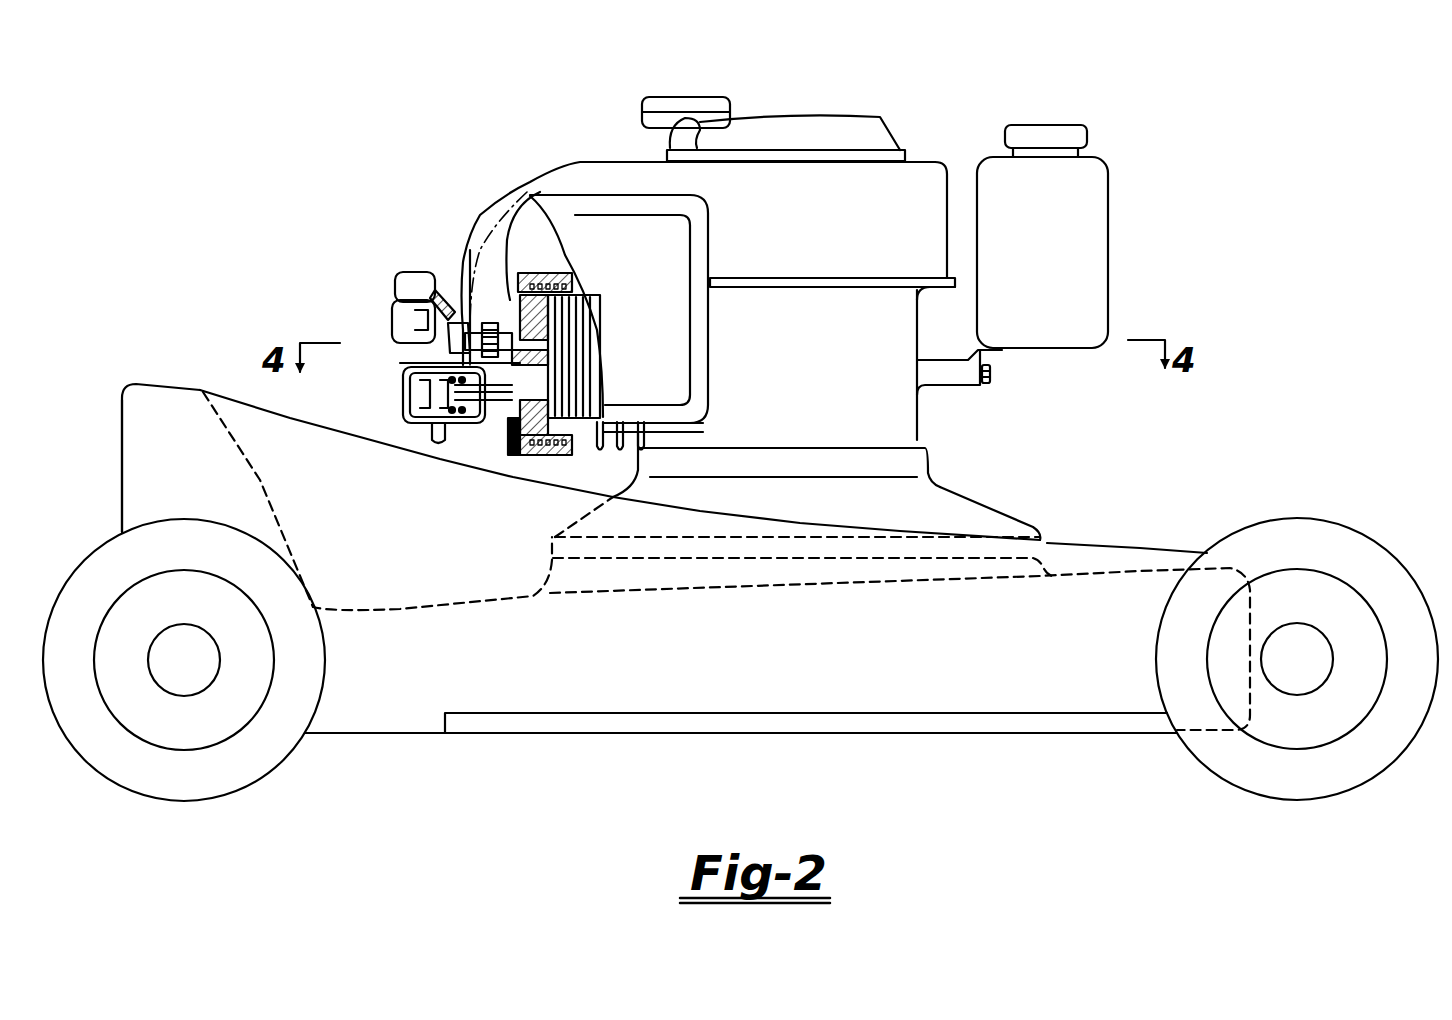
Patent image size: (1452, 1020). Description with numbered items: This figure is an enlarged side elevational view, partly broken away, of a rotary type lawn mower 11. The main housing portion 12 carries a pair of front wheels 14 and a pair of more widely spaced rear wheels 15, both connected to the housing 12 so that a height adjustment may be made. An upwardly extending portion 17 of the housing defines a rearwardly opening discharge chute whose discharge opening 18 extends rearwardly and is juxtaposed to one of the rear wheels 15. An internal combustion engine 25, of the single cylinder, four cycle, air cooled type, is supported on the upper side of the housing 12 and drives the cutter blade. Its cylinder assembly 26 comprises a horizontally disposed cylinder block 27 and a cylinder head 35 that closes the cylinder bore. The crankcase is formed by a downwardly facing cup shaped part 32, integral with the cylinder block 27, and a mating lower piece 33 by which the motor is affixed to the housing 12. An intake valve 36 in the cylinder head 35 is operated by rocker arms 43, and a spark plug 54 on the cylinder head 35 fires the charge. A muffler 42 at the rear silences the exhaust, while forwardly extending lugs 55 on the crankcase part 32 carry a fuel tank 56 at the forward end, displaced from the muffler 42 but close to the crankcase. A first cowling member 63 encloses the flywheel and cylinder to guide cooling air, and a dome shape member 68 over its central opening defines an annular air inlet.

The rotary type lawn mower 11 is at (1170, 302).
The main housing portion 12 is at (822, 690).
The front wheels 14 is at (1305, 788).
The rear wheels 15 is at (203, 789).
The upwardly extending portion 17 is at (362, 438).
The discharge opening 18 is at (121, 440).
The internal combustion engine 25 is at (759, 303).
The cylinder assembly 26 is at (543, 462).
The cylinder block 27 is at (583, 290).
The cup shaped part 32 is at (907, 422).
The lower piece 33 is at (943, 503).
The cylinder head 35 is at (515, 300).
The intake valve 36 is at (490, 455).
The muffler 42 is at (686, 356).
The rocker arms 43 is at (412, 381).
The spark plug 54 is at (500, 325).
The lugs 55 is at (946, 370).
The fuel tank 56 is at (1093, 255).
The first cowling member 63 is at (833, 258).
The dome shape member 68 is at (815, 115).